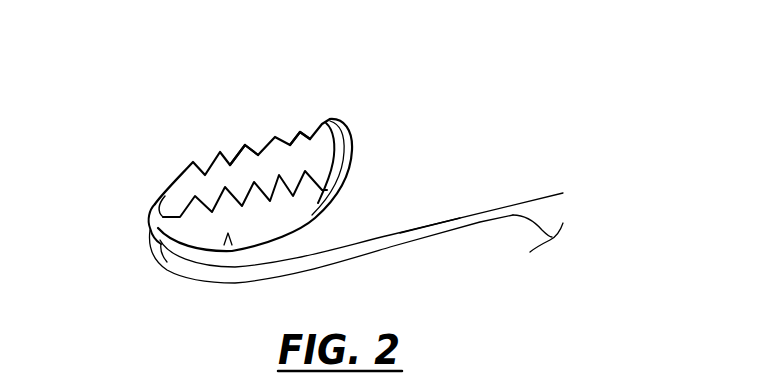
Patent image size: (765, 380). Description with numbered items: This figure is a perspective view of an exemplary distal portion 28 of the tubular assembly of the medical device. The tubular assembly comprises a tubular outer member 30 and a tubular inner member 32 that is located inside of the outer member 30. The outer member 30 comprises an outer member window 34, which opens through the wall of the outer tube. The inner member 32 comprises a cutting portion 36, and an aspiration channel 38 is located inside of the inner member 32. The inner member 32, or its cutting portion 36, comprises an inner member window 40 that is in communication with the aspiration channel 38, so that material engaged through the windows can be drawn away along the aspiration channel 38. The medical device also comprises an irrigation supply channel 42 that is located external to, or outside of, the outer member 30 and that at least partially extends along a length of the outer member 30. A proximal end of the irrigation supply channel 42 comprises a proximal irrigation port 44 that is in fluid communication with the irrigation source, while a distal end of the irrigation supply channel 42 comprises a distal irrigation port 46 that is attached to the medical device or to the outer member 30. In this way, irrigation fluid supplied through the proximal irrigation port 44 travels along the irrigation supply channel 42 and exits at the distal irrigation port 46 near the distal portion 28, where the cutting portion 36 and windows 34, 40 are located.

The distal portion 28 is at (120, 176).
The tubular outer member 30 is at (332, 112).
The tubular inner member 32 is at (343, 127).
The outer member window 34 is at (228, 234).
The cutting portion 36 is at (300, 134).
The aspiration channel 38 is at (423, 187).
The inner member window 40 is at (252, 165).
The irrigation supply channel 42 is at (358, 245).
The proximal irrigation port 44 is at (545, 238).
The distal irrigation port 46 is at (153, 245).